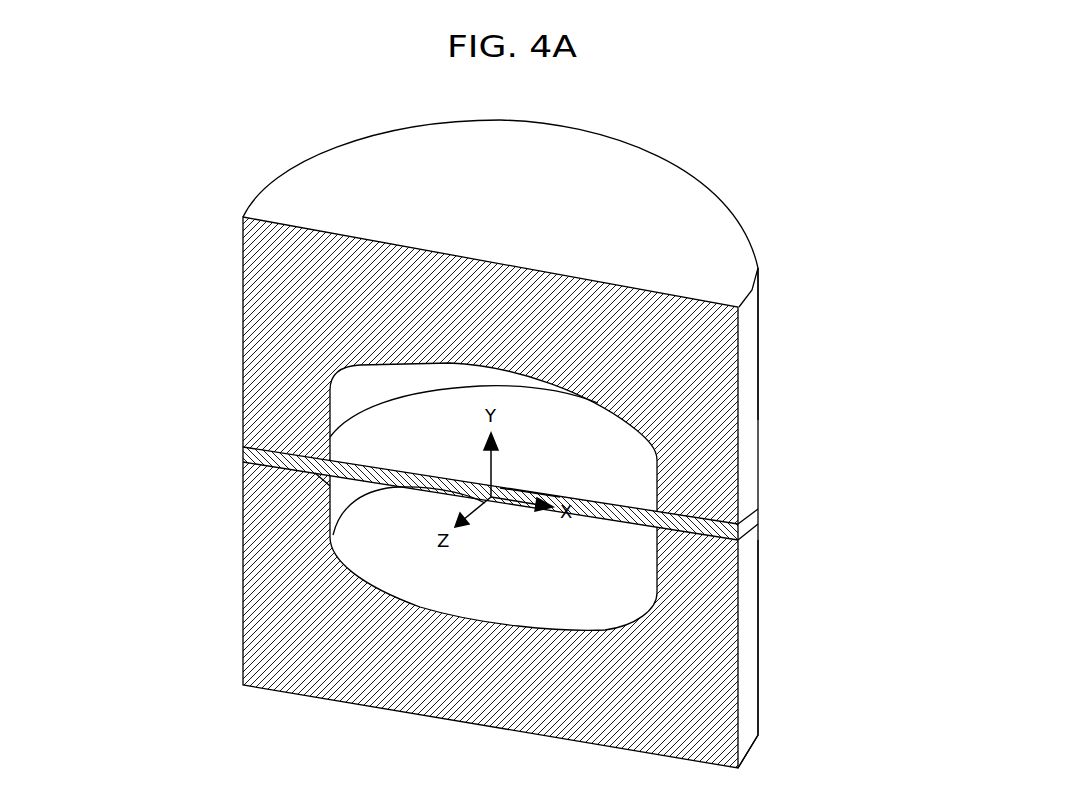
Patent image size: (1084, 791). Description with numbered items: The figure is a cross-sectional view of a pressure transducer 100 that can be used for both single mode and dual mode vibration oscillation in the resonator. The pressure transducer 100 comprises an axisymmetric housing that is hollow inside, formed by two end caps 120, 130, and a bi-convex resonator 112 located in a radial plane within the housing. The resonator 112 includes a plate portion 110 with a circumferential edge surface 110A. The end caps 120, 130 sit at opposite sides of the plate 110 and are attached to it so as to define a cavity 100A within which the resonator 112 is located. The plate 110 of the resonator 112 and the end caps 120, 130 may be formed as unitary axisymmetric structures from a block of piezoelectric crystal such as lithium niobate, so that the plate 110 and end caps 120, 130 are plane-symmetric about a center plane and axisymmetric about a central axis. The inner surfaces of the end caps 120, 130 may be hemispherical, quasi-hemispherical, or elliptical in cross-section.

The pressure transducer 100 is at (777, 486).
The cavity 100A is at (386, 443).
The plate portion 110 is at (740, 578).
The circumferential edge surface 110A is at (243, 450).
The bi-convex resonator 112 is at (528, 486).
The end cap 120 is at (740, 403).
The end cap 130 is at (738, 703).